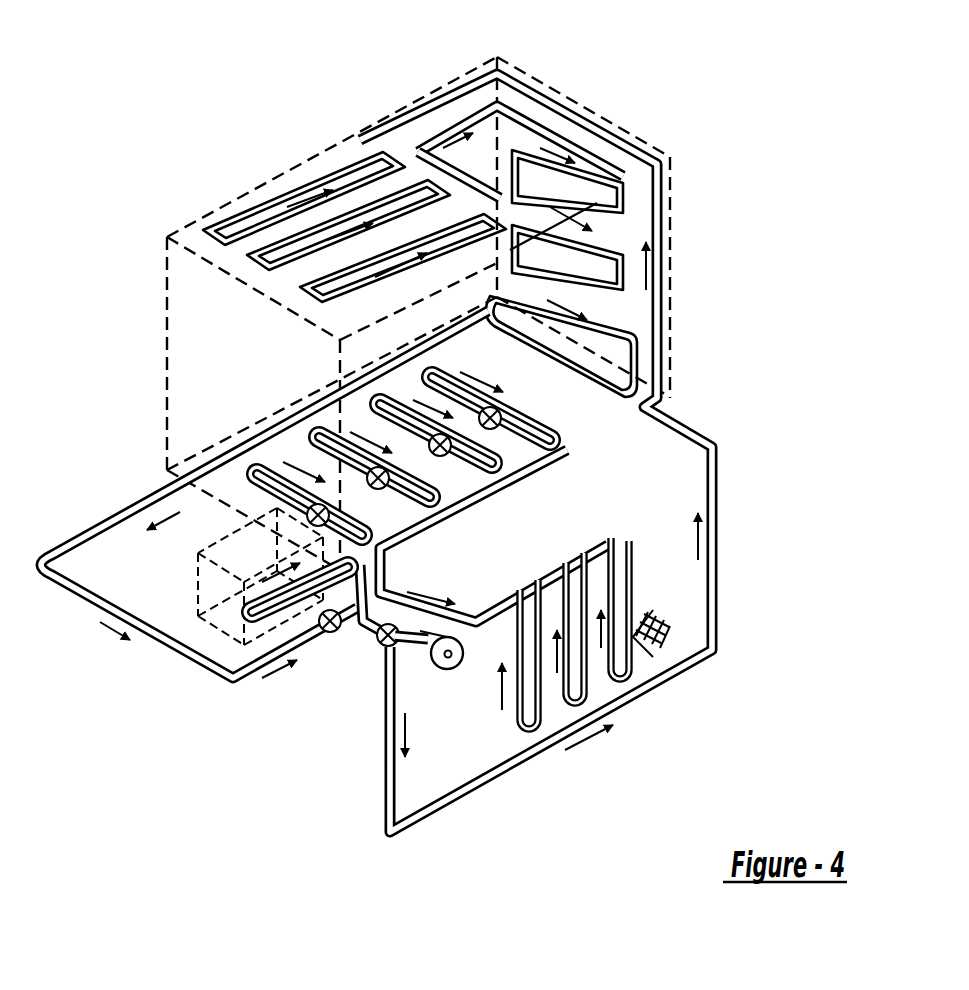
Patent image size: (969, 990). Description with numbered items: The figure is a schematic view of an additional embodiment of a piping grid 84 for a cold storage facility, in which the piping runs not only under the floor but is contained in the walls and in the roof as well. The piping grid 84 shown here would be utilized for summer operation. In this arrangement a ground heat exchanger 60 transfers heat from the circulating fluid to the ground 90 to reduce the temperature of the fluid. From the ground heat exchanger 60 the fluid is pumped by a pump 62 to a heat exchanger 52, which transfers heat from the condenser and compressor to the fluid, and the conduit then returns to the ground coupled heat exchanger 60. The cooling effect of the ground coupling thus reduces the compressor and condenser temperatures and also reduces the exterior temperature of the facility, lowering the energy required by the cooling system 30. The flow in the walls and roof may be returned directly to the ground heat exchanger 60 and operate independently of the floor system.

The cooling system 30 is at (196, 585).
The heat exchanger 52 is at (250, 625).
The ground heat exchanger 60 is at (640, 598).
The pump 62 is at (448, 667).
The piping grid 84 is at (457, 127).
The ground 90 is at (665, 628).